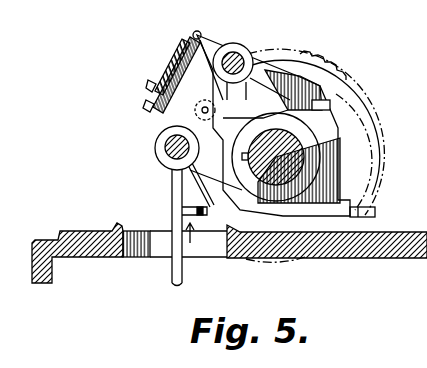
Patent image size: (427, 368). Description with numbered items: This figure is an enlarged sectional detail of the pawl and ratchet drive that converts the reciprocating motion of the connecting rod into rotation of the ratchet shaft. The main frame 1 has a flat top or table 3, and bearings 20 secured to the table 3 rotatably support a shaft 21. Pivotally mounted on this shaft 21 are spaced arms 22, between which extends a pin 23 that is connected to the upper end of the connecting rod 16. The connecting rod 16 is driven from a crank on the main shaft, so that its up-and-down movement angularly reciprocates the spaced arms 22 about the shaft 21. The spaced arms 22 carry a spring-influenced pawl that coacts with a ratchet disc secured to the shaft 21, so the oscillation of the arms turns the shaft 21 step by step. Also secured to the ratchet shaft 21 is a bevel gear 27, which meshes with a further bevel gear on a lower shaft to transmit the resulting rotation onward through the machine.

The main frame 1 is at (91, 221).
The table 3 is at (393, 232).
The connecting rod 16 is at (172, 266).
The bearings 20 is at (338, 170).
The shaft 21 is at (308, 158).
The spaced arms 22 is at (158, 127).
The pin 23 is at (172, 157).
The bevel gear 27 is at (326, 70).